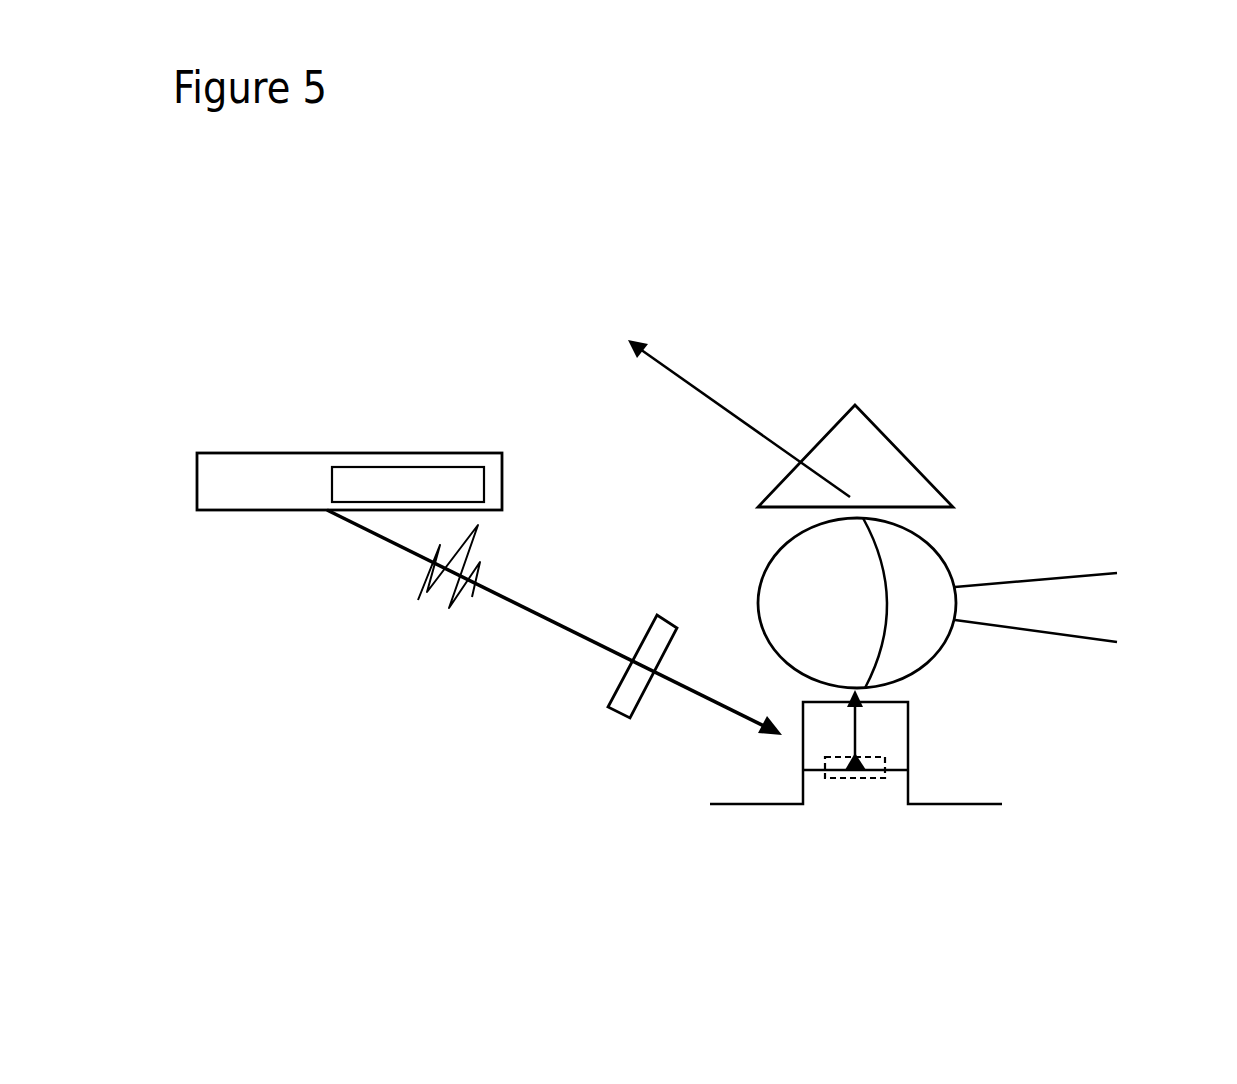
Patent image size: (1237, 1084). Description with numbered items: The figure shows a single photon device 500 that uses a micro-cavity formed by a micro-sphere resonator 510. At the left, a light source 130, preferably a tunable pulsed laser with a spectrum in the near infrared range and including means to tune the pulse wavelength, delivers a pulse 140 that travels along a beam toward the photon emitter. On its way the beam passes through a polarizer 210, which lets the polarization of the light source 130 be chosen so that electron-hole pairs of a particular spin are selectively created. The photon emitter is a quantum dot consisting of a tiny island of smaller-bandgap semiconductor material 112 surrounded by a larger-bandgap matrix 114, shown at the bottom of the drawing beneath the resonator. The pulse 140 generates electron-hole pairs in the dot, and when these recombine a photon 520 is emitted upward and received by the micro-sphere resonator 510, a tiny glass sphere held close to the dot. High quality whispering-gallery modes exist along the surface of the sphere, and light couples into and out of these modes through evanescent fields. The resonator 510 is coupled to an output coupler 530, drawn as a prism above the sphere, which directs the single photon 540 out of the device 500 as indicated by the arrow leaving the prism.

The single photon device 500 is at (376, 265).
The light source 130 is at (275, 510).
The pulse 140 is at (432, 600).
The polarizer 210 is at (614, 708).
The output coupler 530 is at (897, 440).
The single photon 540 is at (723, 405).
The micro-sphere resonator 510 is at (1064, 533).
The photon 520 is at (857, 727).
The smaller-bandgap semiconductor material 112 is at (860, 757).
The larger-bandgap matrix 114 is at (877, 778).